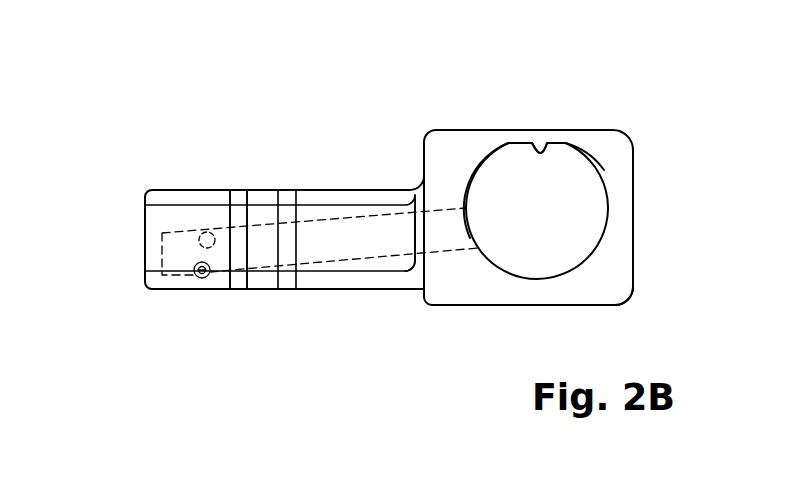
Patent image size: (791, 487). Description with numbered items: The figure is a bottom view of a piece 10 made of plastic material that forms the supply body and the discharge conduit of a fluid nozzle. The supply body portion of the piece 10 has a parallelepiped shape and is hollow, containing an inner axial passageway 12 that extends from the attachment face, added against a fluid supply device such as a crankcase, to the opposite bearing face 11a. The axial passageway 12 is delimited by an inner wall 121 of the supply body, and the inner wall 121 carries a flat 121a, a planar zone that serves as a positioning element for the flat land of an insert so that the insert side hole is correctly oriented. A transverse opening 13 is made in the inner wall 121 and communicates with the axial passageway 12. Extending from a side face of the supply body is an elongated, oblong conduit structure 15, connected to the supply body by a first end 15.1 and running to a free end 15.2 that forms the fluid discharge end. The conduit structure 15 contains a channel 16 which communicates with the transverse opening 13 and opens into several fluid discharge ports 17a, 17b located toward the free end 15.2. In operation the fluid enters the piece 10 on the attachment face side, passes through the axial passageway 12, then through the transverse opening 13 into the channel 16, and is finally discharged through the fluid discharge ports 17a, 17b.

The piece 10 is at (440, 104).
The bearing face 11a is at (600, 277).
The inner axial passageway 12 is at (558, 225).
The inner wall 121 is at (582, 178).
The flat 121a is at (544, 142).
The transverse opening 13 is at (476, 212).
The conduit structure 15 is at (294, 298).
The first end 15.1 is at (418, 300).
The free end 15.2 is at (207, 296).
The channel 16 is at (443, 235).
The fluid discharge port 17a is at (200, 243).
The fluid discharge port 17b is at (197, 288).